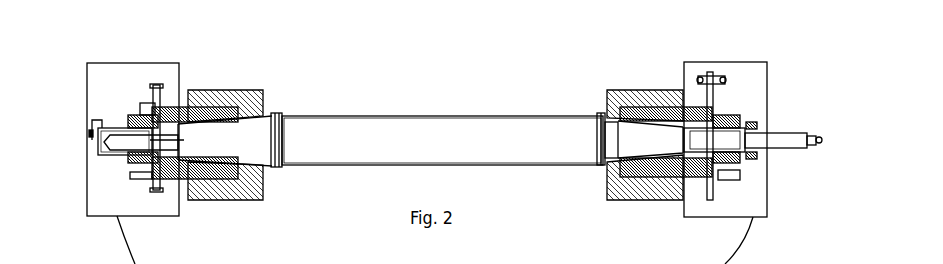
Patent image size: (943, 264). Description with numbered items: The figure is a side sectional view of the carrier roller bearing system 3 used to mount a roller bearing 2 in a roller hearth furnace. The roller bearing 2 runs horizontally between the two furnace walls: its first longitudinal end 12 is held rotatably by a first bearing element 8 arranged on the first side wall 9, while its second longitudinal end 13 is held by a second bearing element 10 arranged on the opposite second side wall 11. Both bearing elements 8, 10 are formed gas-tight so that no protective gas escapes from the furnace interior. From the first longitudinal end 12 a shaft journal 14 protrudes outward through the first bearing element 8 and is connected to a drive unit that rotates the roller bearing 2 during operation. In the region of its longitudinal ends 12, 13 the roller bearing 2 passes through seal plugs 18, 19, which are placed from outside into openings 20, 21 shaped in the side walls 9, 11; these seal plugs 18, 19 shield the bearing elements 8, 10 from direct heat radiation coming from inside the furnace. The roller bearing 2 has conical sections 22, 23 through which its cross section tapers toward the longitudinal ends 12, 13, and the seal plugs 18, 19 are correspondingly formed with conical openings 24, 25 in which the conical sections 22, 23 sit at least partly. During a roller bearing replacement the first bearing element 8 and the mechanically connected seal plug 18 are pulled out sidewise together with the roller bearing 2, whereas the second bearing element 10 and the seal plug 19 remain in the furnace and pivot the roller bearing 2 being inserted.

The roller bearing 2 is at (396, 112).
The carrier roller bearing system 3 is at (591, 76).
The first bearing element 8 is at (748, 88).
The first side wall 9 is at (627, 197).
The second bearing element 10 is at (118, 108).
The second side wall 11 is at (228, 198).
The first longitudinal end 12 is at (720, 142).
The second longitudinal end 13 is at (183, 143).
The shaft journal 14 is at (755, 140).
The seal plug 18 is at (669, 118).
The seal plug 19 is at (200, 115).
The opening 20 is at (612, 117).
The opening 21 is at (240, 118).
The conical section 22 is at (654, 149).
The conical section 23 is at (246, 150).
The conical opening 24 is at (645, 121).
The conical opening 25 is at (233, 158).